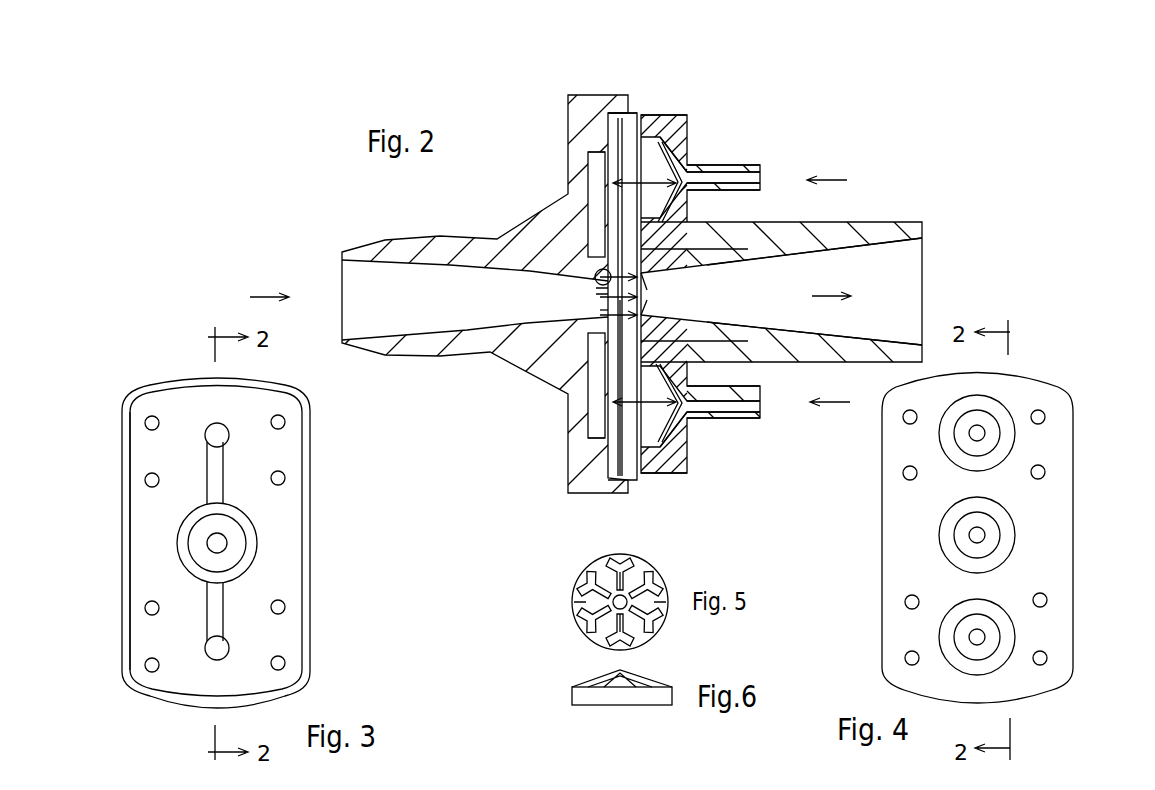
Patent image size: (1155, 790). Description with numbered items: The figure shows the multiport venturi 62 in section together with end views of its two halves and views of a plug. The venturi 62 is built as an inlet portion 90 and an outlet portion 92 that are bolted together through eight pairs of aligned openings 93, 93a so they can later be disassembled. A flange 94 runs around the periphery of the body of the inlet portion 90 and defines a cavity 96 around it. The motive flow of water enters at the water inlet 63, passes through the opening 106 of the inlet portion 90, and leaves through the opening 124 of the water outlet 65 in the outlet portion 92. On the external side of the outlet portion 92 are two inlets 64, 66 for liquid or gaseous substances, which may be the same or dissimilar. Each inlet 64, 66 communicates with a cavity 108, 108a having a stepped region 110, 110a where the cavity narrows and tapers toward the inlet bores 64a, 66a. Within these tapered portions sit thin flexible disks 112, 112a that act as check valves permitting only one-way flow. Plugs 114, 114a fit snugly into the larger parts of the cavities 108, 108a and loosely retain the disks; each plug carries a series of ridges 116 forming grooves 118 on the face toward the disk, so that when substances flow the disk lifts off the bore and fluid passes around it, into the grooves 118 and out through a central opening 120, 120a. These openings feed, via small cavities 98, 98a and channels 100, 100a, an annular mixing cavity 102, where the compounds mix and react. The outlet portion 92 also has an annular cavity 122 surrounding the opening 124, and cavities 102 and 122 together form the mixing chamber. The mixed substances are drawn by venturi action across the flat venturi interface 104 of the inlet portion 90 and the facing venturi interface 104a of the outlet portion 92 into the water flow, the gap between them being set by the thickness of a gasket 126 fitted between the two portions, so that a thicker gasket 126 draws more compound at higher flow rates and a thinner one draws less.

In FIG. 2, the multiport venturi 62 is at (502, 95).
In FIG. 2, the water inlet 63 is at (436, 300).
In FIG. 2, the inlet 64 is at (743, 166).
In FIG. 2, the inlet bore 64a is at (747, 188).
In FIG. 2, the water outlet 65 is at (894, 298).
In FIG. 2, the inlet 66 is at (760, 422).
In FIG. 2, the inlet bore 66a is at (760, 410).
In FIG. 2, the inlet portion 90 is at (558, 180).
In FIG. 2, the outlet portion 92 is at (816, 144).
In FIG. 3, the aligned openings 93 is at (143, 418).
In FIG. 4, the aligned openings 93a is at (1047, 417).
In FIG. 2, the flange 94 is at (613, 95).
In FIG. 3, the flange 94 is at (138, 388).
In FIG. 3, the cavity 96 is at (153, 452).
In FIG. 2, the small cavity 98 is at (590, 152).
In FIG. 3, the small cavity 98 is at (228, 427).
In FIG. 2, the small cavity 98a is at (600, 437).
In FIG. 3, the small cavity 98a is at (226, 648).
In FIG. 2, the channel 100 is at (593, 183).
In FIG. 3, the channel 100 is at (223, 470).
In FIG. 2, the channel 100a is at (570, 396).
In FIG. 3, the channel 100a is at (223, 593).
In FIG. 2, the annular mixing cavity 102 is at (593, 213).
In FIG. 3, the annular mixing cavity 102 is at (250, 550).
In FIG. 2, the venturi interface 104 is at (595, 277).
In FIG. 3, the venturi interface 104 is at (193, 552).
In FIG. 2, the venturi interface 104a is at (605, 300).
In FIG. 4, the venturi interface 104a is at (982, 552).
In FIG. 2, the opening 106 is at (596, 291).
In FIG. 3, the opening 106 is at (228, 538).
In FIG. 2, the cavity 108 is at (641, 118).
In FIG. 4, the cavity 108 is at (1000, 404).
In FIG. 2, the cavity 108a is at (648, 470).
In FIG. 4, the cavity 108a is at (1013, 638).
In FIG. 2, the stepped region 110 is at (670, 117).
In FIG. 4, the stepped region 110 is at (1007, 432).
In FIG. 2, the stepped region 110a is at (670, 456).
In FIG. 2, the disk 112 is at (678, 150).
In FIG. 5, the disk 112 is at (678, 586).
In FIG. 2, the disk 112a is at (690, 424).
In FIG. 5, the disk 112a is at (640, 556).
In FIG. 2, the plug 114 is at (637, 120).
In FIG. 5, the plug 114 is at (623, 600).
In FIG. 6, the plug 114 is at (546, 690).
In FIG. 2, the plug 114a is at (652, 437).
In FIG. 5, the plug 114a is at (623, 600).
In FIG. 6, the plug 114a is at (570, 697).
In FIG. 5, the ridges 116 is at (657, 581).
In FIG. 5, the grooves 118 is at (660, 608).
In FIG. 2, the central opening 120 is at (672, 180).
In FIG. 2, the central opening 120a is at (683, 430).
In FIG. 2, the annular cavity 122 is at (708, 270).
In FIG. 4, the annular cavity 122 is at (987, 513).
In FIG. 2, the opening 124 is at (647, 295).
In FIG. 4, the opening 124 is at (977, 533).
In FIG. 2, the gasket 126 is at (612, 118).